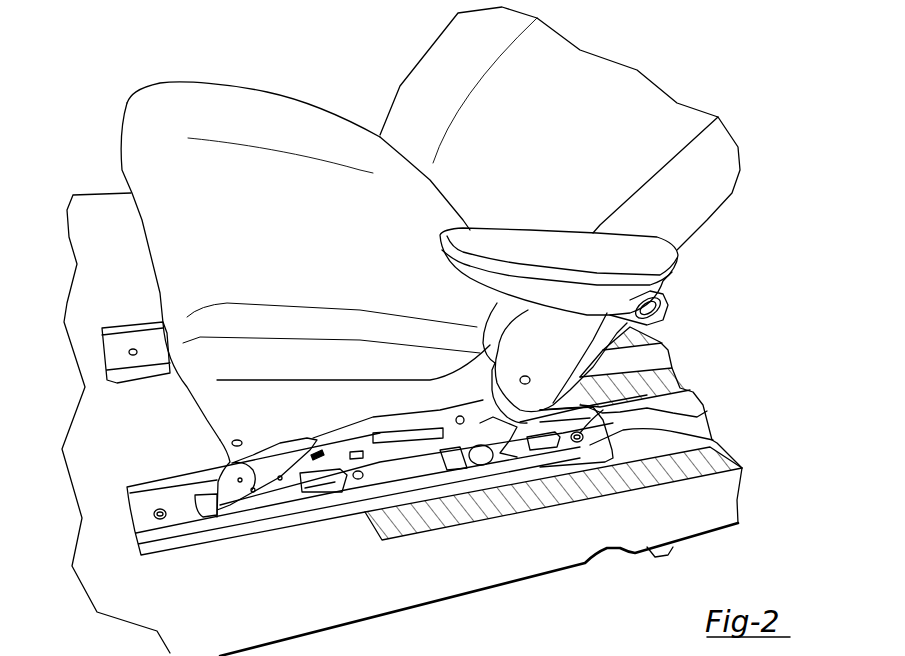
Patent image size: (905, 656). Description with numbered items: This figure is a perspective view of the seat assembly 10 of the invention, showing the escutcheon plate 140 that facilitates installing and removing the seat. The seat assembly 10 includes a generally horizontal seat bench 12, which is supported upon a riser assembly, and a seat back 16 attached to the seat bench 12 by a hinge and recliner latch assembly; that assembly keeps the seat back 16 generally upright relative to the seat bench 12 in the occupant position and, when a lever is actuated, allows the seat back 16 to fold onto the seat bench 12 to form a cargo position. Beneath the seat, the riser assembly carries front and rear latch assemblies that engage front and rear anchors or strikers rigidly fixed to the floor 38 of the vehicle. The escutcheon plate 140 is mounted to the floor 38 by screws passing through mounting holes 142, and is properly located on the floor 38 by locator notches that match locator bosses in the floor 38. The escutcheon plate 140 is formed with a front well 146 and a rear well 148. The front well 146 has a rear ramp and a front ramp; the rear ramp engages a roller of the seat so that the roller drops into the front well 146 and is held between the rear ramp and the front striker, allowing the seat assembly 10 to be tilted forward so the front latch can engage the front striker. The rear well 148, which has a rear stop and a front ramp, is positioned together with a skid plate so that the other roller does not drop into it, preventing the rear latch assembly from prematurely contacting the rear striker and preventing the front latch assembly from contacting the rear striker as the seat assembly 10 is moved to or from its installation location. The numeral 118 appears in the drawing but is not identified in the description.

The seat assembly 10 is at (192, 64).
The seat bench 12 is at (238, 85).
The seat back 16 is at (398, 88).
The floor 38 is at (675, 522).
The floor pan 118 is at (312, 653).
The escutcheon plate 140 is at (717, 443).
The mounting holes 142 is at (720, 392).
The front well 146 is at (327, 490).
The rear well 148 is at (553, 455).